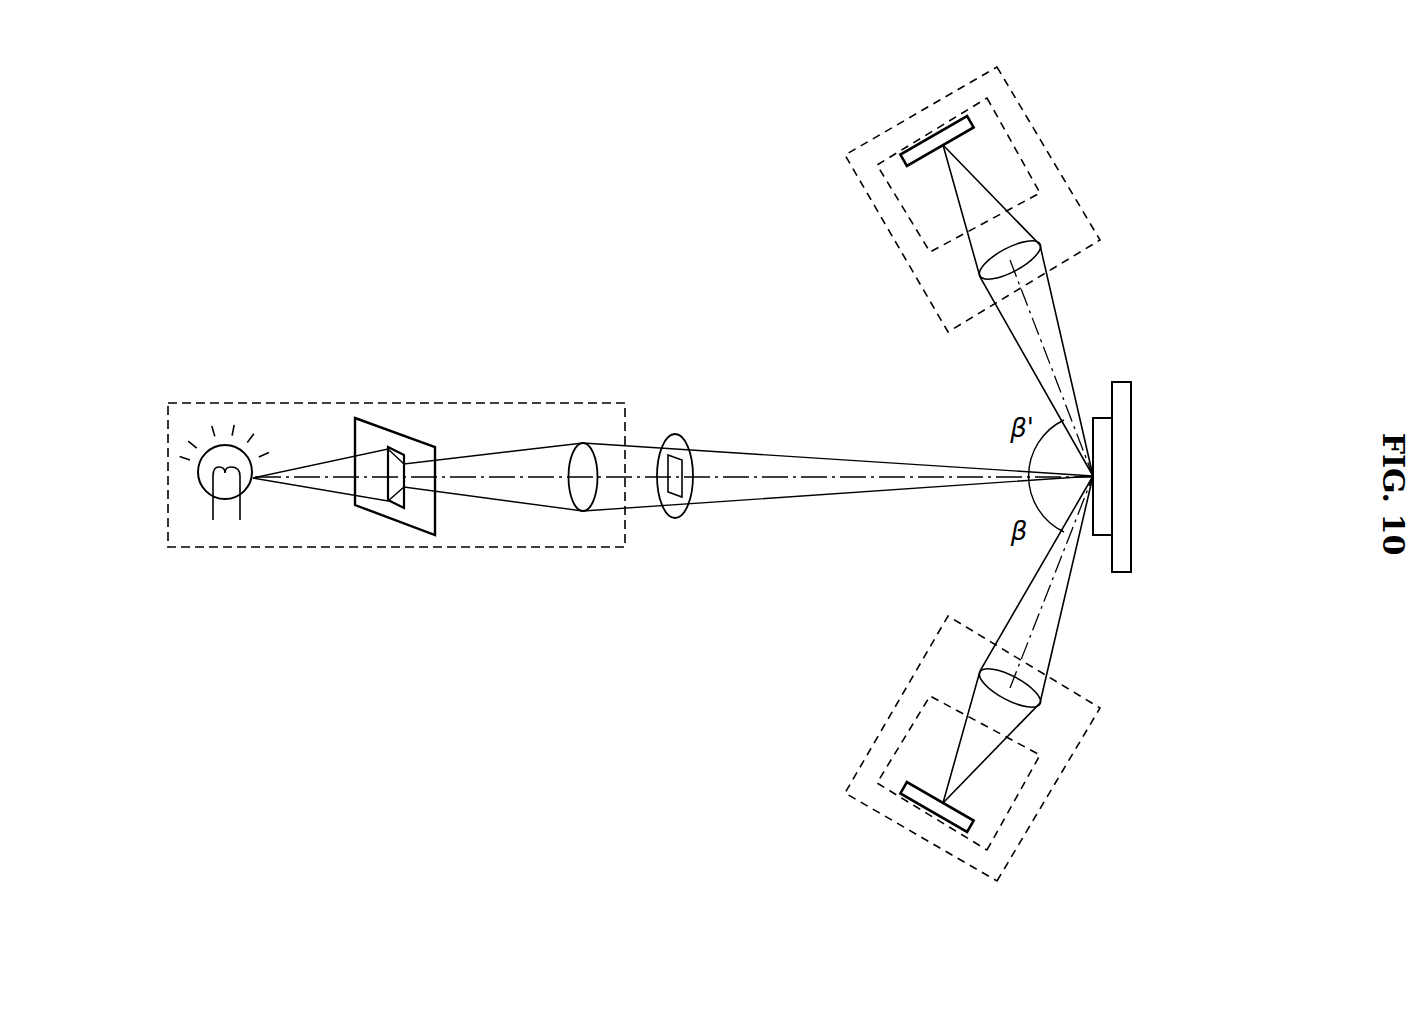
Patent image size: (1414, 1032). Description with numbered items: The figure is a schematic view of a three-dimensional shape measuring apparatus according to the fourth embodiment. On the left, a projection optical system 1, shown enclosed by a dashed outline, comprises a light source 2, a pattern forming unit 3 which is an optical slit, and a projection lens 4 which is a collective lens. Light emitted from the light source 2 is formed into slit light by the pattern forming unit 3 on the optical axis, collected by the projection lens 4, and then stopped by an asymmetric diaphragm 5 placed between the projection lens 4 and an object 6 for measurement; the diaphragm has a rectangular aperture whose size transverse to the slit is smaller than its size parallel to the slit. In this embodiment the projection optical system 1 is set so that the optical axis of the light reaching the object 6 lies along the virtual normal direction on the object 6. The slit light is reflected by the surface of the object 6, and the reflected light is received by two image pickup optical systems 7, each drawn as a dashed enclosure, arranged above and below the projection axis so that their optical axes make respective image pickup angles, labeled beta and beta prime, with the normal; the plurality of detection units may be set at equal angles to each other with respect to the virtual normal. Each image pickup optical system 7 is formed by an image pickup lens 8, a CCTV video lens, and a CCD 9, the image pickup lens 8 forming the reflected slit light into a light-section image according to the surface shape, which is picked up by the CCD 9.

The projection optical system 1 is at (318, 398).
The light source 2 is at (226, 520).
The pattern forming unit 3 is at (390, 517).
The projection lens 4 is at (583, 510).
The asymmetric diaphragm 5 is at (678, 517).
The object for measurement 6 is at (1131, 540).
The image pickup optical system 7 is at (860, 182).
The image pickup lens 8 is at (1017, 237).
The CCD 9 is at (950, 127).